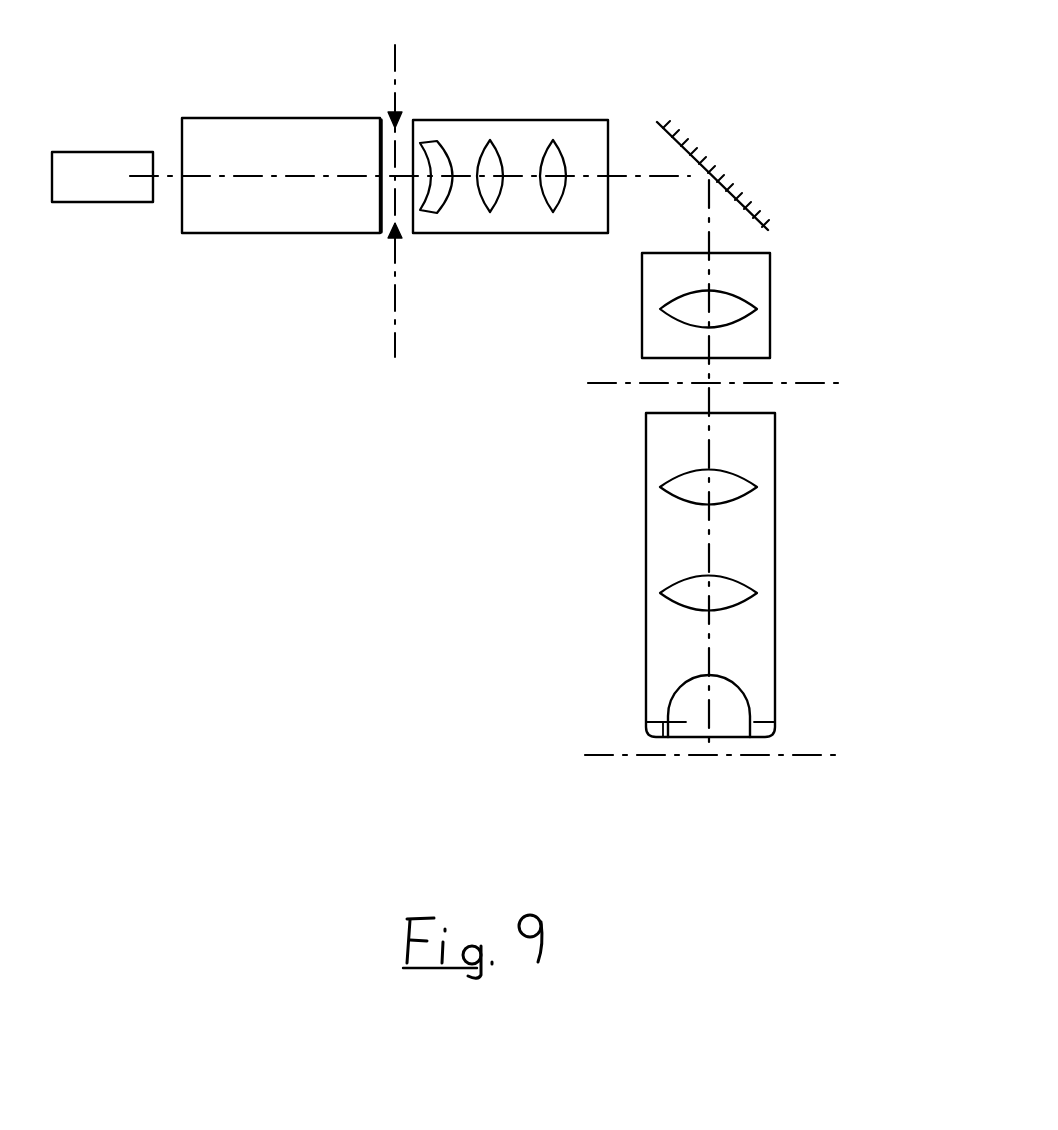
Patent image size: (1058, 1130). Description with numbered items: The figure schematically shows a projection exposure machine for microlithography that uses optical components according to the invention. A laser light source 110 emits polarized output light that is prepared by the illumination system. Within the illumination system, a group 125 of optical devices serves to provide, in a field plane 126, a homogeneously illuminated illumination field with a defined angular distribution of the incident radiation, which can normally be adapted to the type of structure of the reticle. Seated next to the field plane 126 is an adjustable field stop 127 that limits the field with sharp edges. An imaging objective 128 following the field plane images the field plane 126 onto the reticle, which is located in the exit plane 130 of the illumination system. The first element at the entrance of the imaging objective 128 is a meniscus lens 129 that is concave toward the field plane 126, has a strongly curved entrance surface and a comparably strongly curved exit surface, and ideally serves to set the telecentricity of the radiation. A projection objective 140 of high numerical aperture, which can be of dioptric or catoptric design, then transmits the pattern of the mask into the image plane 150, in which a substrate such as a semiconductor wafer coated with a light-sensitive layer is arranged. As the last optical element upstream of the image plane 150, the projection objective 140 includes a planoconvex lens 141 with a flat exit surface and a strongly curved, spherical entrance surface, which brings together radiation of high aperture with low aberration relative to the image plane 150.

The laser light source 110 is at (78, 152).
The group of optical devices 125 is at (268, 130).
The field plane 126 is at (395, 42).
The adjustable field stop 127 is at (397, 232).
The imaging objective 128 is at (668, 80).
The meniscus lens 129 is at (433, 152).
The exit plane 130 is at (812, 383).
The projection objective 140 is at (775, 543).
The planoconvex lens 141 is at (737, 706).
The image plane 150 is at (845, 755).